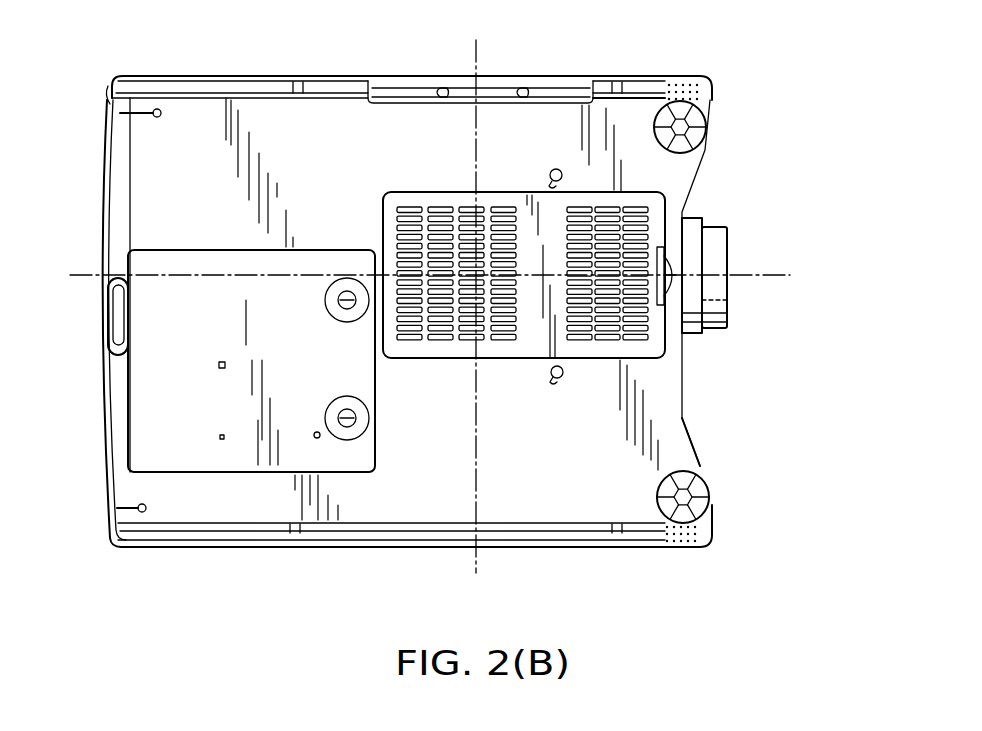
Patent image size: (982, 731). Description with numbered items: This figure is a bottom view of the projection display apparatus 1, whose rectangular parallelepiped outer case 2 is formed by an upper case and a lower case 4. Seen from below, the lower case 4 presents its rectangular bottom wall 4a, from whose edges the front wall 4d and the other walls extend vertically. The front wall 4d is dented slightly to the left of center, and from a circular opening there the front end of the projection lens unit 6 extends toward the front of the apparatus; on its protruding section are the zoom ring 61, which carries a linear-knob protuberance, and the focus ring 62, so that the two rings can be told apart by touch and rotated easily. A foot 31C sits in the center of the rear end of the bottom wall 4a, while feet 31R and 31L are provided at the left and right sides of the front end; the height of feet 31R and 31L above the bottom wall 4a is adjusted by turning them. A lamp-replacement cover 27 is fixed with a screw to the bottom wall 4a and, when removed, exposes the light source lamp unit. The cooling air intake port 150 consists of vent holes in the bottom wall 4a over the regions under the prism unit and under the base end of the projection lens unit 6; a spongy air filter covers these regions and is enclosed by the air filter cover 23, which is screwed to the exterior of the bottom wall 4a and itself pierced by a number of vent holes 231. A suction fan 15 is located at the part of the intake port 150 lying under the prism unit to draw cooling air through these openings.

The projection display apparatus 1 is at (745, 66).
The outer case 2 is at (138, 75).
The lower case 4 is at (535, 506).
The bottom wall 4a is at (560, 456).
The front wall 4d is at (703, 455).
The projection lens unit 6 is at (768, 150).
The suction fan 15 is at (413, 218).
The air filter cover 23 is at (568, 350).
The lamp-replacement cover 27 is at (258, 446).
The foot 31C is at (108, 307).
The left foot 31L is at (712, 112).
The right foot 31R is at (710, 491).
The zoom ring 61 is at (690, 222).
The focus ring 62 is at (708, 232).
The cooling air intake port 150 is at (432, 374).
The vent holes 231 is at (645, 352).